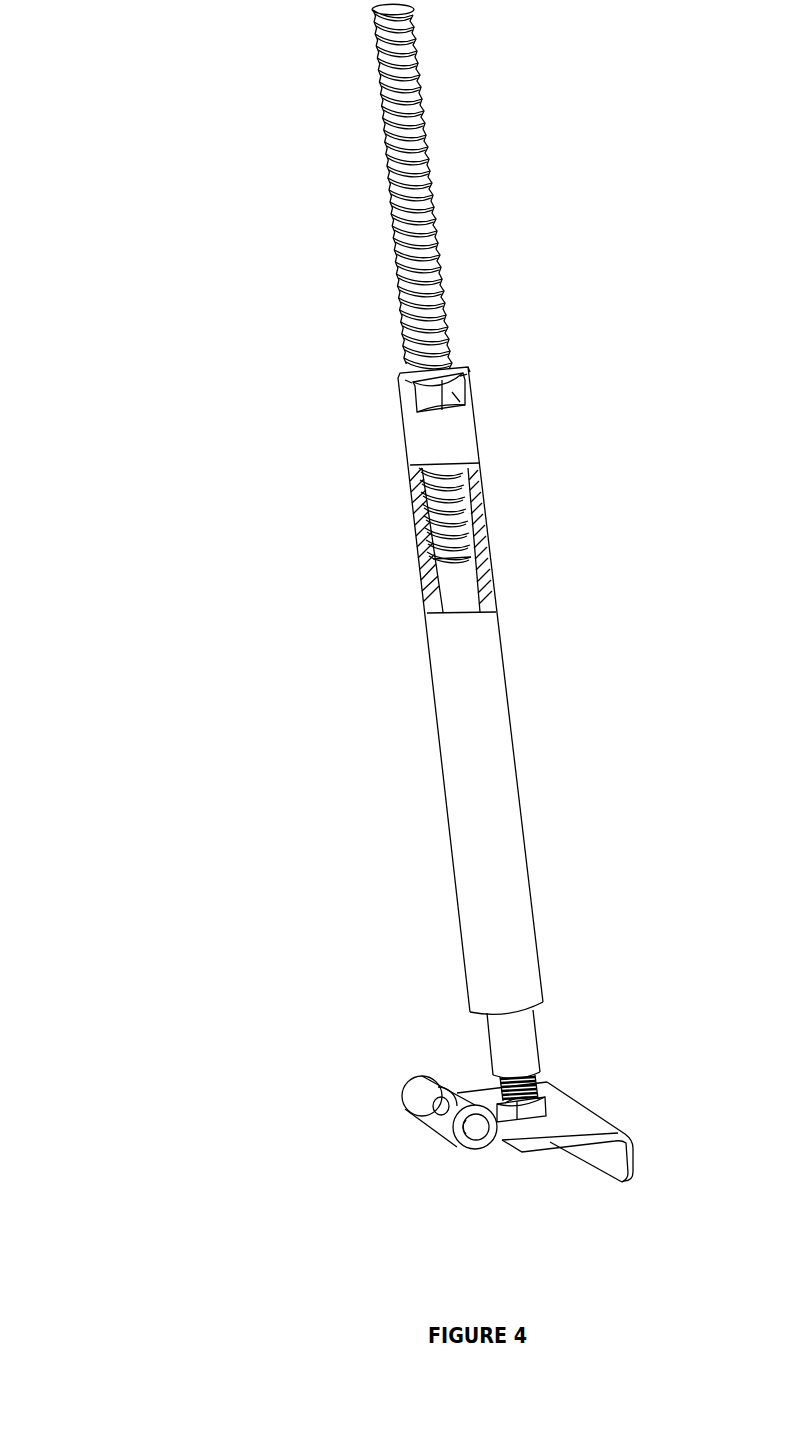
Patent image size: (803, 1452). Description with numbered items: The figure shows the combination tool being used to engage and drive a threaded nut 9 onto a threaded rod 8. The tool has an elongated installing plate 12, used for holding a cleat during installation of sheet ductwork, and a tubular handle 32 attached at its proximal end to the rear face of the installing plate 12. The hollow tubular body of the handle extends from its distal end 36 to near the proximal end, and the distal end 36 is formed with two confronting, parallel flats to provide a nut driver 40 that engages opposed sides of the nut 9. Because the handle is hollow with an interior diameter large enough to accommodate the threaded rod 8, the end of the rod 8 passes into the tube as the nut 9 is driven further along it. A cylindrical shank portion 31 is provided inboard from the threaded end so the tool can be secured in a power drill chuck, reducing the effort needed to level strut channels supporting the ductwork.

The threaded rod 8 is at (428, 133).
The threaded nut 9 is at (450, 393).
The installing plate 12 is at (548, 1140).
The shank portion 31 is at (515, 1028).
The tubular handle 32 is at (493, 820).
The distal end 36 is at (405, 408).
The nut driver 40 is at (160, 559).